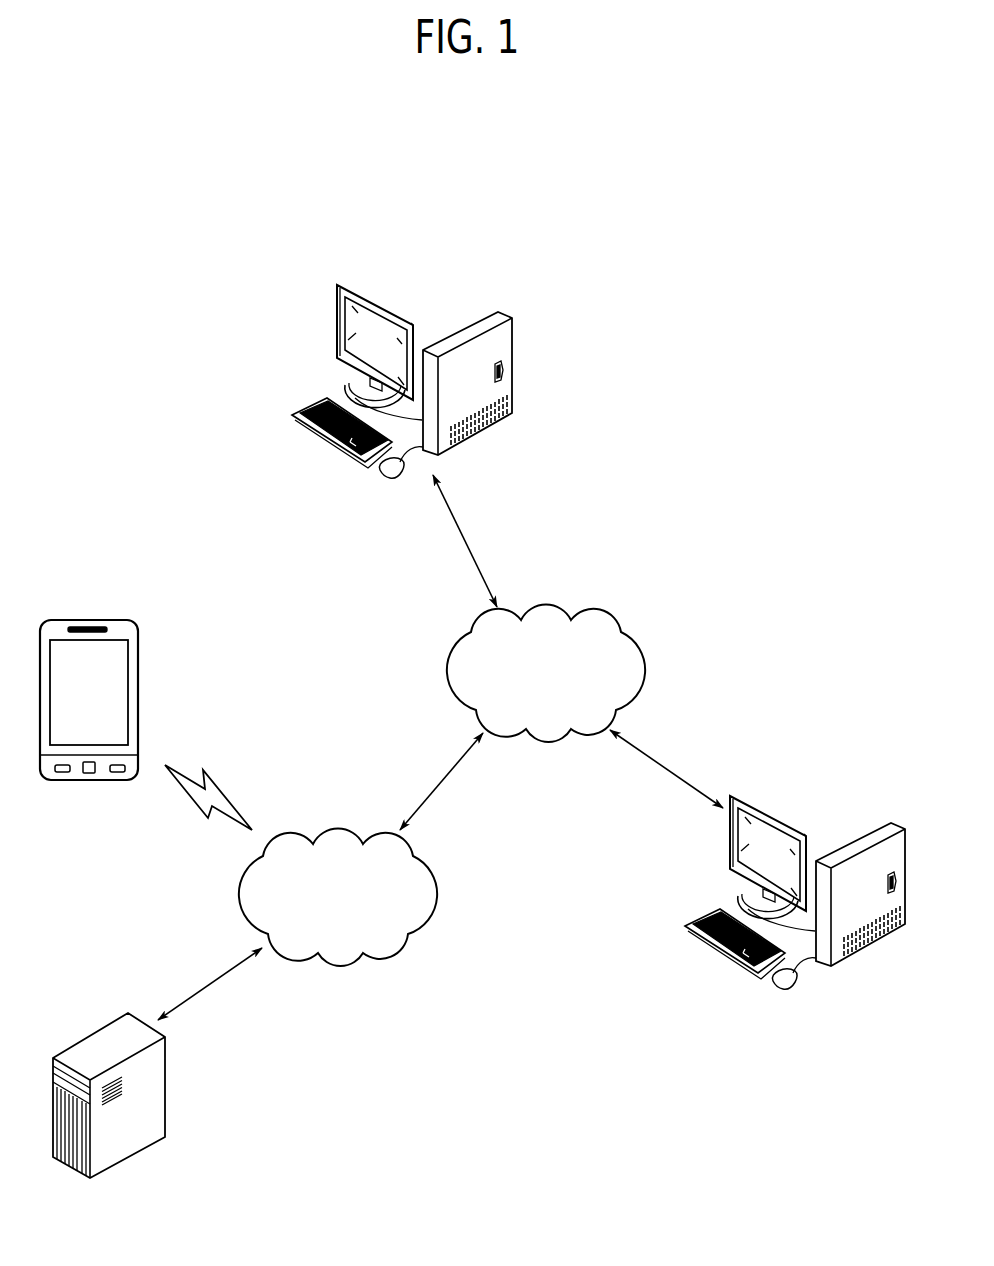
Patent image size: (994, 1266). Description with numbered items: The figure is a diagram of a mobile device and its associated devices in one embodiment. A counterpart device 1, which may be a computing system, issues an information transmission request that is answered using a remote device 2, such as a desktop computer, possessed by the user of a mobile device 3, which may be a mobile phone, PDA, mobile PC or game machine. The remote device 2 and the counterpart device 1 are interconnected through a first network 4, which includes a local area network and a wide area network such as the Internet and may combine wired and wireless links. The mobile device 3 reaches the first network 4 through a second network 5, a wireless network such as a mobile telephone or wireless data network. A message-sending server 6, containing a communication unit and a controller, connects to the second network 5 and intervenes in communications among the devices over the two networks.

The counterpart device 1 is at (877, 829).
The remote device 2 is at (482, 321).
The mobile device 3 is at (87, 618).
The first network 4 is at (545, 605).
The second network 5 is at (340, 829).
The message-sending server 6 is at (160, 1107).